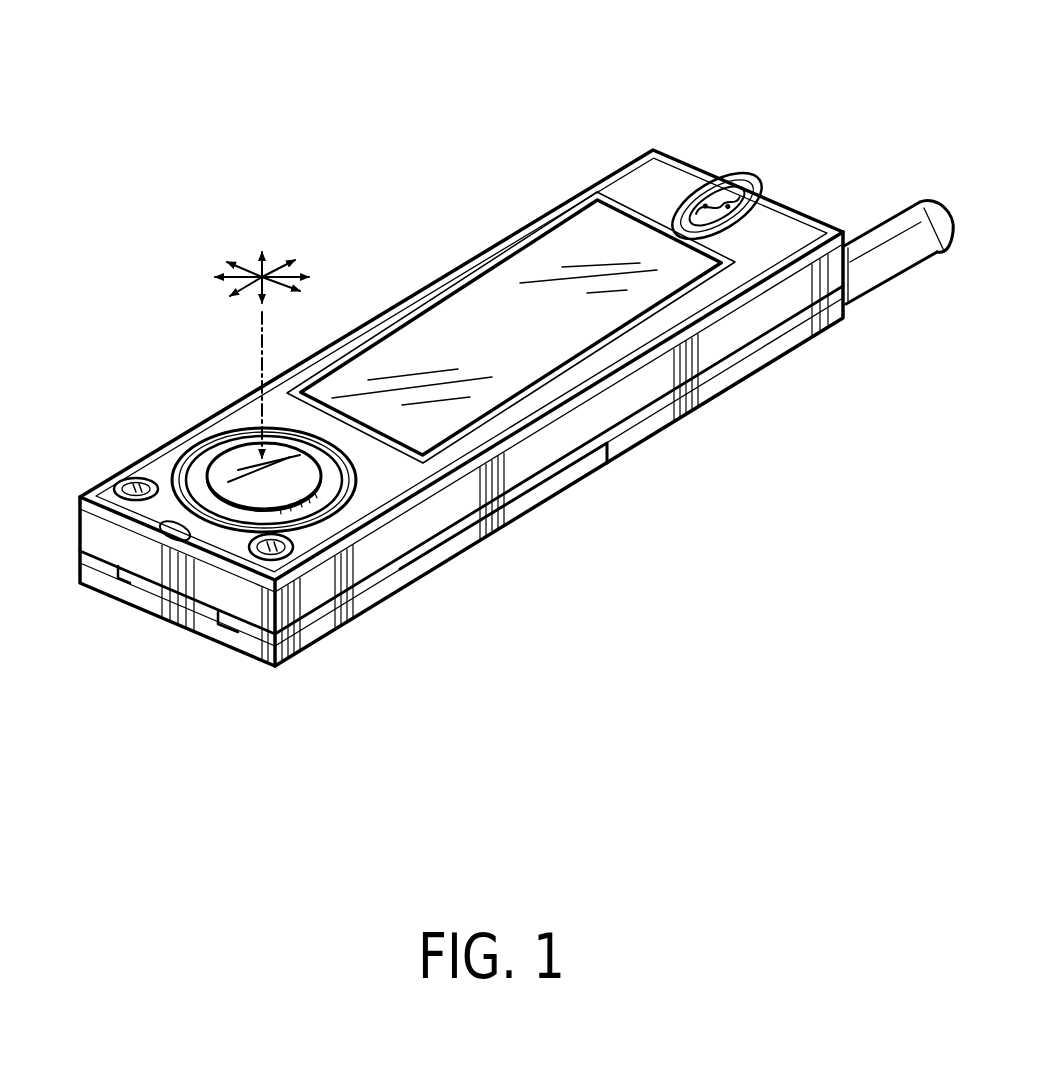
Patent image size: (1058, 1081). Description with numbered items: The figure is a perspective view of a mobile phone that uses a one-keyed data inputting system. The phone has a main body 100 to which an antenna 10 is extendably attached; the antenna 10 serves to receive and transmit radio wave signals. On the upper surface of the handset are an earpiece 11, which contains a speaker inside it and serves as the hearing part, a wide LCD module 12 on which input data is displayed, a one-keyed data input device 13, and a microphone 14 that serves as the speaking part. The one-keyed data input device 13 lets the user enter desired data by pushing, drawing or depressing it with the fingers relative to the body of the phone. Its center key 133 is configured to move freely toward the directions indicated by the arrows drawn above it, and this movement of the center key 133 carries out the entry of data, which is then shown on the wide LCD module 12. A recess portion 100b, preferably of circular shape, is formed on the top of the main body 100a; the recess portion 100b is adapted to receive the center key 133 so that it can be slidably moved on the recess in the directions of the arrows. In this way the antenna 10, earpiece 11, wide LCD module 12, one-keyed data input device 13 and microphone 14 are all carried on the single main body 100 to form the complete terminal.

The main body 100 is at (372, 292).
The top of the main body 100a is at (632, 187).
The recess portion 100b is at (180, 458).
The antenna 10 is at (877, 242).
The earpiece 11 is at (722, 196).
The wide LCD module 12 is at (480, 317).
The one-keyed data input device 13 is at (240, 450).
The microphone 14 is at (162, 523).
The center key 133 is at (322, 455).